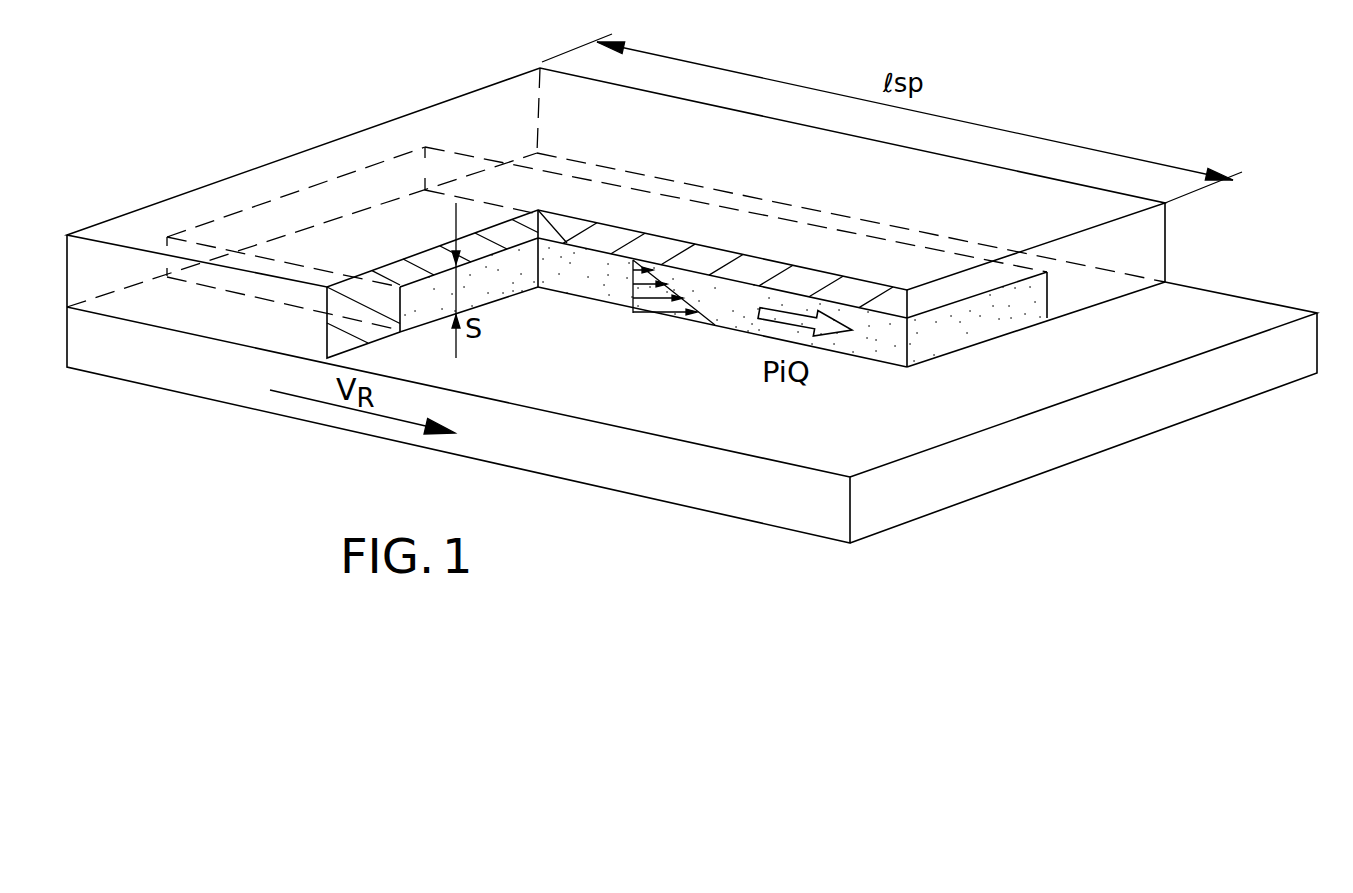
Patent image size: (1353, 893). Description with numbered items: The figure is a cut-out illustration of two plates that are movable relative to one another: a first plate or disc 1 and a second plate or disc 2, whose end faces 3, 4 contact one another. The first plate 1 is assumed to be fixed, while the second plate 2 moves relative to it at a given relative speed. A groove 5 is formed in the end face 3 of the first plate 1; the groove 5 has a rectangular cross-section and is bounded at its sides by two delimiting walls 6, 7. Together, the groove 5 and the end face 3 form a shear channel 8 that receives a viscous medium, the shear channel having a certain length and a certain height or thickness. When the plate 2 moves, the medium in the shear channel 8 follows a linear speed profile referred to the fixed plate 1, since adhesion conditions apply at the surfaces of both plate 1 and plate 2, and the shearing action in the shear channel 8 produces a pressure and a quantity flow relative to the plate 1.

The first plate 1 is at (102, 268).
The second plate 2 is at (103, 353).
The end face of first plate 3 is at (1118, 298).
The end face of second plate 4 is at (1197, 338).
The groove 5 is at (993, 290).
The delimiting wall 6 is at (405, 301).
The delimiting wall 7 is at (1033, 307).
The shear channel 8 is at (952, 330).